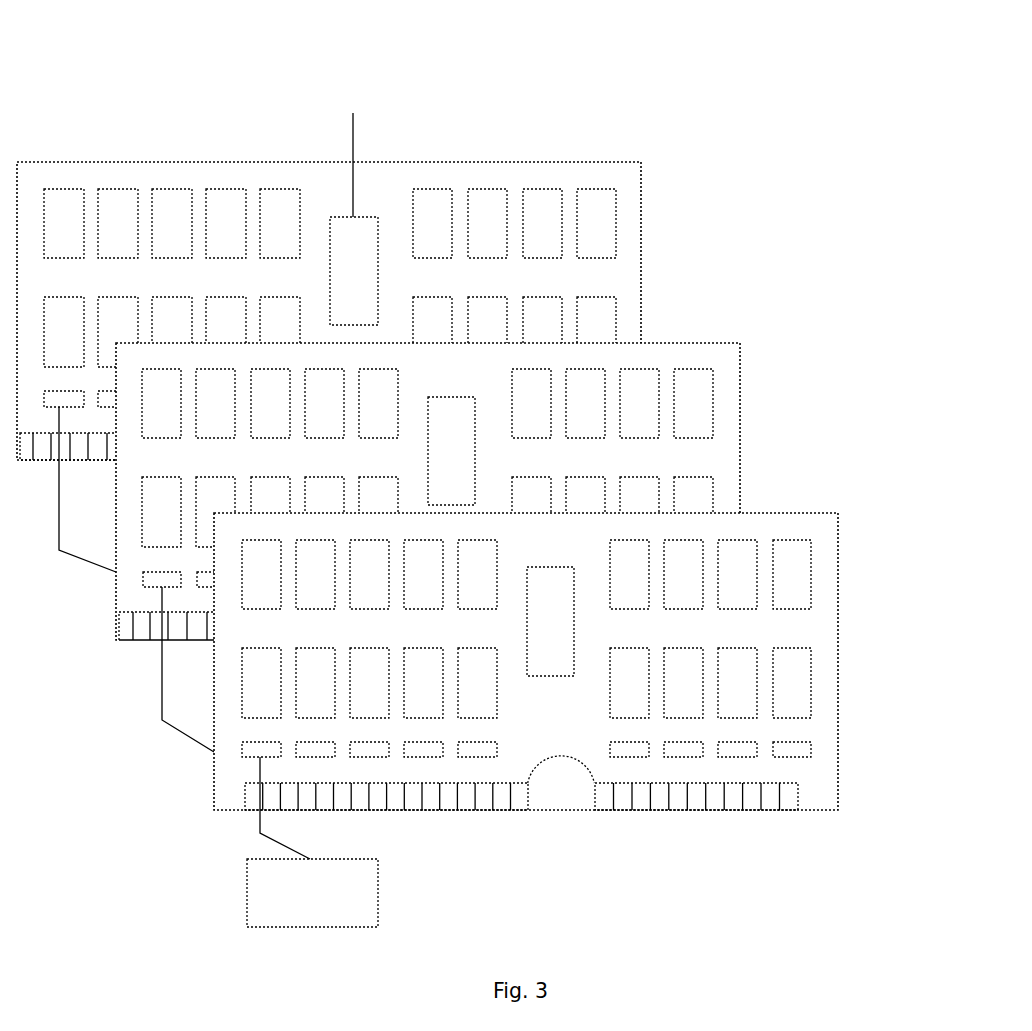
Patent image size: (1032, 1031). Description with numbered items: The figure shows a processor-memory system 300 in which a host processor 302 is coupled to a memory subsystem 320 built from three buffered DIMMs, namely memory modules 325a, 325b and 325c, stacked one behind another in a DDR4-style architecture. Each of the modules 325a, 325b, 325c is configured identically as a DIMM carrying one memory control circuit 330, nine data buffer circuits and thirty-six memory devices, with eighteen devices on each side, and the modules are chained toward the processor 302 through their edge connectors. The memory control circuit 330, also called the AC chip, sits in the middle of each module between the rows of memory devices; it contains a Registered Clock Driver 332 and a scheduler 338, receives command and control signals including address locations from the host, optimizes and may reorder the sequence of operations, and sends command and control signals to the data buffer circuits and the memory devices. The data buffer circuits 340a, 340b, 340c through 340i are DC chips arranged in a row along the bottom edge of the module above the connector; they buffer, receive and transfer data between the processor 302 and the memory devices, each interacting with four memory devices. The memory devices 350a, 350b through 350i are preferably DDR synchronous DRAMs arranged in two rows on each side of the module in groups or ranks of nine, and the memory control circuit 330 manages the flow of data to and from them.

The processor-memory system 300 is at (147, 87).
The processor 302 is at (247, 885).
The memory subsystem 320 is at (762, 313).
The memory module 325a is at (502, 479).
The memory module 325b is at (740, 375).
The memory module 325c is at (641, 194).
The memory control circuit 330 is at (428, 425).
The Registered Clock Driver 332 is at (465, 433).
The scheduler 338 is at (465, 417).
The data buffer circuit 340a is at (811, 749).
The data buffer circuit 340b is at (738, 757).
The data buffer circuit 340c is at (672, 749).
The data buffer circuit 340i is at (248, 752).
The memory device 350a is at (793, 573).
The memory device 350b is at (739, 683).
The memory device 350i is at (260, 683).